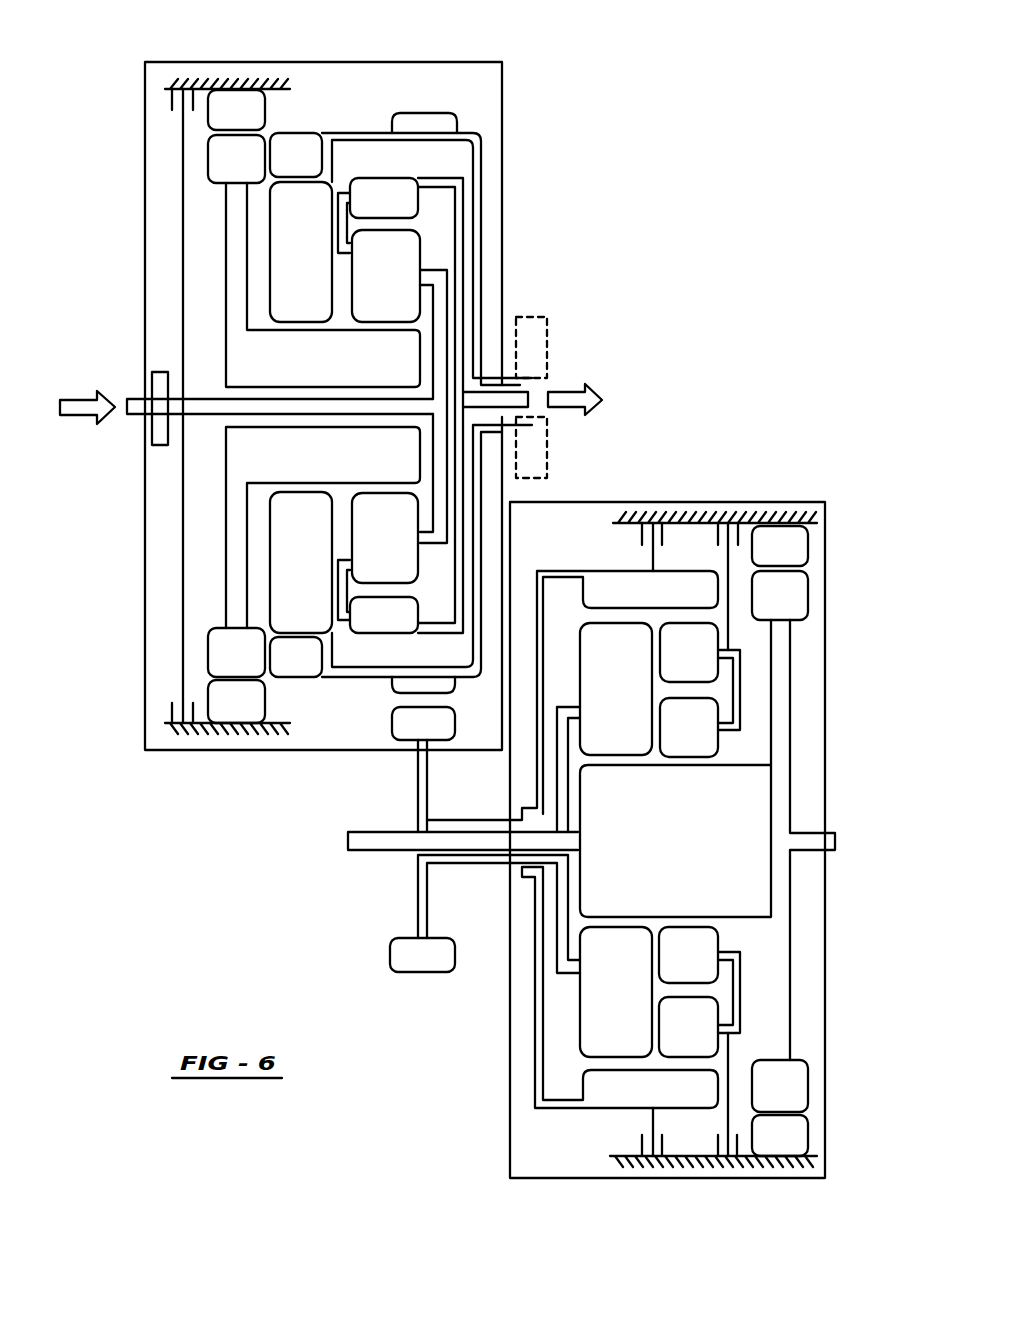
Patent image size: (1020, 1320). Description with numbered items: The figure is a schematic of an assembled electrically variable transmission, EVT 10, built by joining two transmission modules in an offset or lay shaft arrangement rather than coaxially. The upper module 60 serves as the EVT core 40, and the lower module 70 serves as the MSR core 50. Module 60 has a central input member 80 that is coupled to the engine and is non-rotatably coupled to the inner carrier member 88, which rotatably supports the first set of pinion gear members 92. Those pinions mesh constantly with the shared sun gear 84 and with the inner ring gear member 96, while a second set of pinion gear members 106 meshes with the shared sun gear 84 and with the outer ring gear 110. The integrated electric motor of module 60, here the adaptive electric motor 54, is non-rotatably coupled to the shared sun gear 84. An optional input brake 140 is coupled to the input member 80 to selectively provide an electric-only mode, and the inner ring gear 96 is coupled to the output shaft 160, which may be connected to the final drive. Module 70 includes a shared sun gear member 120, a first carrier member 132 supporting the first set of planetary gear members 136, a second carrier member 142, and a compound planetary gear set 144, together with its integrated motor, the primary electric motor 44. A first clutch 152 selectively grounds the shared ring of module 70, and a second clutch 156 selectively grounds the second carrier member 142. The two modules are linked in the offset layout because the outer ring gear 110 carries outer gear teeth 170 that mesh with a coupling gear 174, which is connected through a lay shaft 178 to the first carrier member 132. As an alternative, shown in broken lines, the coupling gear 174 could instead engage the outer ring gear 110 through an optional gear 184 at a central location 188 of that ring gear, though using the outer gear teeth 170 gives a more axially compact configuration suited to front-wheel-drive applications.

The assembled EVT 10 is at (660, 125).
The EVT core 40 is at (503, 113).
The primary electric motor 44 is at (810, 569).
The MSR core 50 is at (826, 600).
The adaptive electric motor 54 is at (274, 121).
The module 60 is at (377, 53).
The module 70 is at (716, 488).
The central input member 80 is at (222, 453).
The shared sun gear 84 is at (353, 374).
The inner carrier member 88 is at (441, 302).
The first set of pinion gear members 92 is at (396, 291).
The inner ring gear member 96 is at (397, 207).
The second set of pinion gear members 106 is at (311, 259).
The outer ring gear 110 is at (366, 132).
The shared sun gear member 120 is at (689, 862).
The first carrier member 132 is at (550, 903).
The first set of planetary gear members 136 is at (637, 706).
The input brake 140 is at (183, 184).
The second carrier member 142 is at (742, 673).
The compound planetary gear set 144 is at (724, 697).
The first clutch 152 is at (657, 522).
The second clutch 156 is at (745, 522).
The output shaft 160 is at (525, 400).
The outer gear teeth 170 is at (403, 689).
The coupling gear 174 is at (418, 896).
The lay shaft 178 is at (463, 862).
The optional gear 184 is at (535, 313).
The central location 188 is at (503, 383).